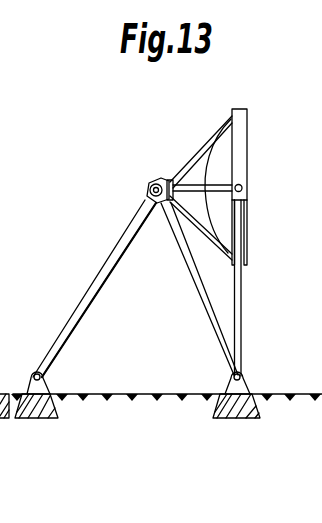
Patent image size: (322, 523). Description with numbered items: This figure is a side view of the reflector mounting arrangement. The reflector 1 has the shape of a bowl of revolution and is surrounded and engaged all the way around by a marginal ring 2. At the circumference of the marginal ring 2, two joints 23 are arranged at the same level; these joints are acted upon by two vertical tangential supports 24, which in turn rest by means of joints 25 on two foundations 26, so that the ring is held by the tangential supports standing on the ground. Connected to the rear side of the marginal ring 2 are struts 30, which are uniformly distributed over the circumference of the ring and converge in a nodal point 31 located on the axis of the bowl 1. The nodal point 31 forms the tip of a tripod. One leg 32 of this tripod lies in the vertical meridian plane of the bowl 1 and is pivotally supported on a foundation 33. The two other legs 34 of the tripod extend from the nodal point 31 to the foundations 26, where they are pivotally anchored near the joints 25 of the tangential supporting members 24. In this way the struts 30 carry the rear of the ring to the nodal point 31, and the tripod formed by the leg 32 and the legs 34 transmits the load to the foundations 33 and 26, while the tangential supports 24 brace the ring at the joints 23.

The reflector 1 is at (205, 159).
The marginal ring 2 is at (238, 116).
The joint 23 is at (244, 188).
The vertical tangential support 24 is at (242, 312).
The joint 25 is at (0, 376).
The foundation 26 is at (247, 412).
The strut 30 is at (215, 138).
The nodal point 31 is at (152, 183).
The leg 32 is at (100, 275).
The foundation 33 is at (33, 414).
The leg 34 is at (195, 280).